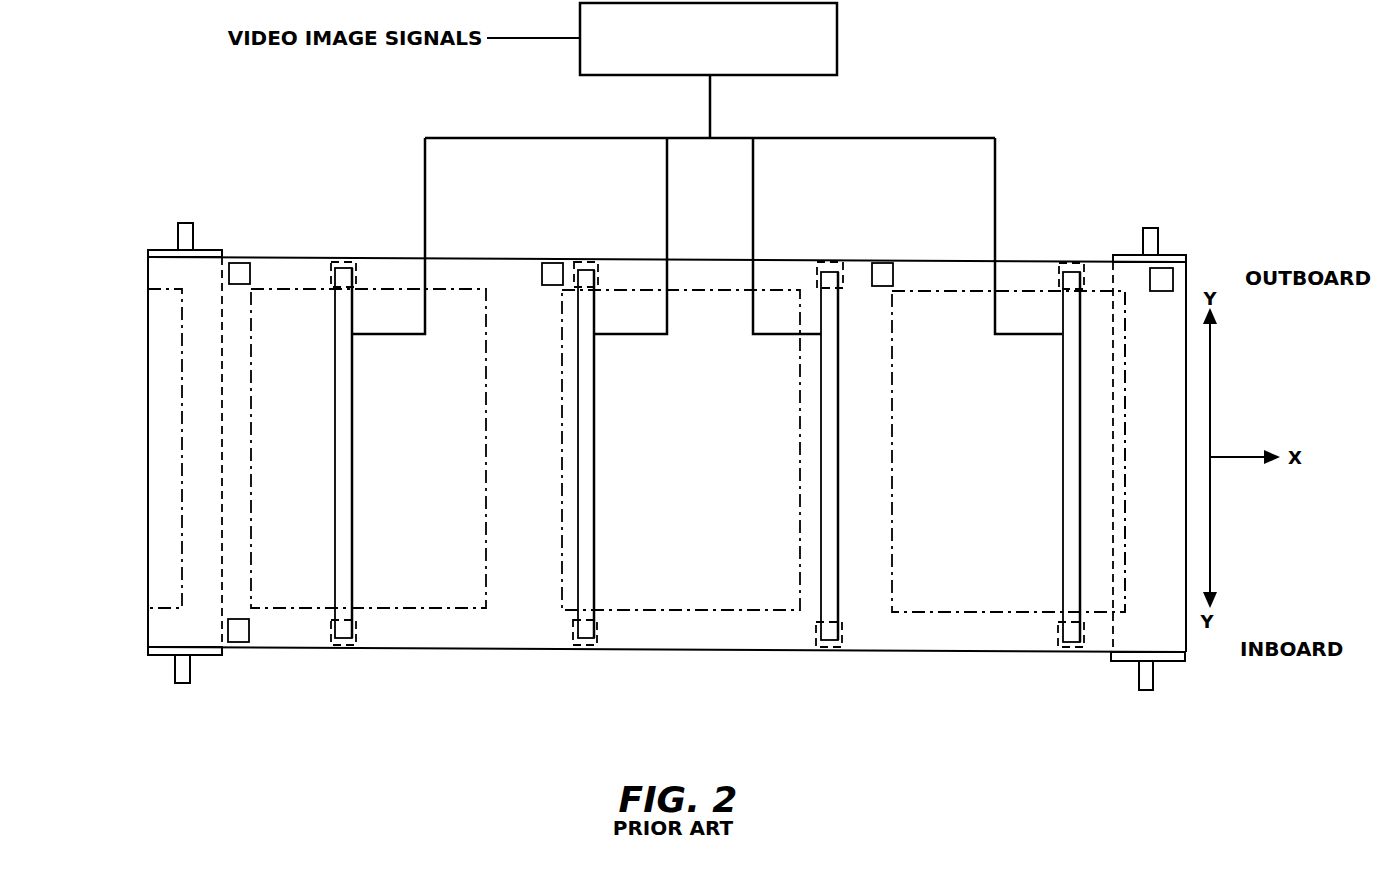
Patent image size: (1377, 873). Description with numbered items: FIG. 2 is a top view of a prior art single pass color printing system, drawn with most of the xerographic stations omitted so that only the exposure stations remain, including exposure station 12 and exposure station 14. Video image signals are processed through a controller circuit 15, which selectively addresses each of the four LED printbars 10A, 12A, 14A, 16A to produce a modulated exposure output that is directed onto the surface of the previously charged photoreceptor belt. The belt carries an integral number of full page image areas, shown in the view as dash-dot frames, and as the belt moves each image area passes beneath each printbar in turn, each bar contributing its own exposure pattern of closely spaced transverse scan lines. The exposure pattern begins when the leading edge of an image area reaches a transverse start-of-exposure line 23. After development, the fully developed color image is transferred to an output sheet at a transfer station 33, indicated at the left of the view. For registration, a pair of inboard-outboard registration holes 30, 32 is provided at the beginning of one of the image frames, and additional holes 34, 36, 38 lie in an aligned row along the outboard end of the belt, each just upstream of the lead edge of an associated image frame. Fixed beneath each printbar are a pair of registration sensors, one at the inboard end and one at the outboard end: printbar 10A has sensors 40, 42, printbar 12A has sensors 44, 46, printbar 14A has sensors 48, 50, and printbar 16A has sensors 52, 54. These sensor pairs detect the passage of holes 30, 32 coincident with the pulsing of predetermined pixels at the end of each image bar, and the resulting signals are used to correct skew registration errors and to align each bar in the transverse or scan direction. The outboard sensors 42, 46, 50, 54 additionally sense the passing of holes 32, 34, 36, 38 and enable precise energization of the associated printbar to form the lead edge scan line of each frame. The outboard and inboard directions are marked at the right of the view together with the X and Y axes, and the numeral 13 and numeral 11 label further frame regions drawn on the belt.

The controller circuit 15 is at (839, 38).
The transfer station 33 is at (110, 437).
The exposure station 14 is at (165, 650).
The print zone 13 is at (433, 612).
The exposure station 12 is at (712, 612).
The print zone 11 is at (977, 612).
The start-of-exposure line 23 is at (898, 457).
The LED printbar 16A is at (343, 452).
The LED printbar 14A is at (585, 455).
The LED printbar 12A is at (829, 457).
The LED printbar 10A is at (1070, 457).
The registration sensor 54 is at (343, 266).
The registration sensor 52 is at (340, 647).
The registration sensor 50 is at (583, 266).
The registration sensor 48 is at (582, 647).
The registration sensor 46 is at (830, 268).
The registration sensor 44 is at (826, 650).
The registration sensor 42 is at (1072, 268).
The registration sensor 40 is at (1068, 652).
The registration hole 32 is at (240, 273).
The registration hole 30 is at (239, 630).
The registration hole 34 is at (553, 275).
The registration hole 36 is at (882, 275).
The registration hole 38 is at (1173, 280).